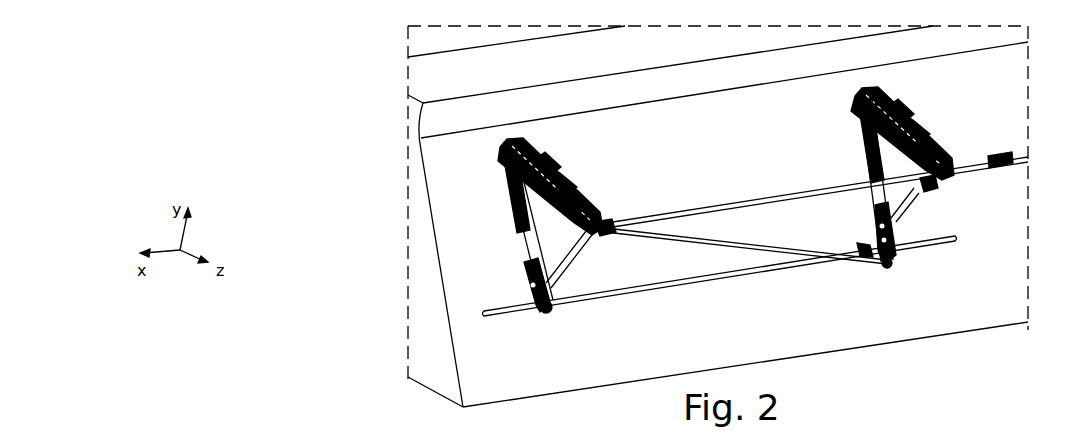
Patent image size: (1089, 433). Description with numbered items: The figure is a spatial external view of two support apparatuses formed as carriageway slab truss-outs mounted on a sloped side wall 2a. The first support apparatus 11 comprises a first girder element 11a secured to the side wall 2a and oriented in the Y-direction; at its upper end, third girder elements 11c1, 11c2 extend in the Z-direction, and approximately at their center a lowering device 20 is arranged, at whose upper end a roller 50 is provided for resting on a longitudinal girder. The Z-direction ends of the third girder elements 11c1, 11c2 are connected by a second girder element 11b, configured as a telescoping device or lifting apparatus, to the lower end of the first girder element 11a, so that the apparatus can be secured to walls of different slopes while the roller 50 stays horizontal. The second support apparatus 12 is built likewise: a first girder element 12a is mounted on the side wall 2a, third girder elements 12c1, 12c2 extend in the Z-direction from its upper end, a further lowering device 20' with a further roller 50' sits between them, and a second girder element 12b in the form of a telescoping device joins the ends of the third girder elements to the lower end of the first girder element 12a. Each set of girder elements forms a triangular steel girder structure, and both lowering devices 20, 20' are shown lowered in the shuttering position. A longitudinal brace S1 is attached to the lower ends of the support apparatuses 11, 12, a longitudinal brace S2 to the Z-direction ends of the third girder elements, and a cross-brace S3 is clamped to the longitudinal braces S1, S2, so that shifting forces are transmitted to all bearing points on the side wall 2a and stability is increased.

The sloped side wall 2a is at (731, 137).
The first support apparatus 11 is at (906, 167).
The first girder element 11a is at (873, 163).
The second girder element 11b is at (917, 197).
The third girder element 11c1 is at (873, 133).
The third girder element 11c2 is at (933, 147).
The second support apparatus 12 is at (568, 211).
The first girder element 12a is at (522, 247).
The second girder element 12b is at (564, 252).
The third girder element 12c1 is at (511, 194).
The third girder element 12c2 is at (590, 205).
The lowering device 20 is at (950, 135).
The further lowering device 20' is at (608, 187).
The roller 50 is at (919, 104).
The further roller 50' is at (584, 165).
The longitudinal brace S1 is at (703, 282).
The longitudinal brace S2 is at (763, 198).
The cross-brace S3 is at (776, 244).